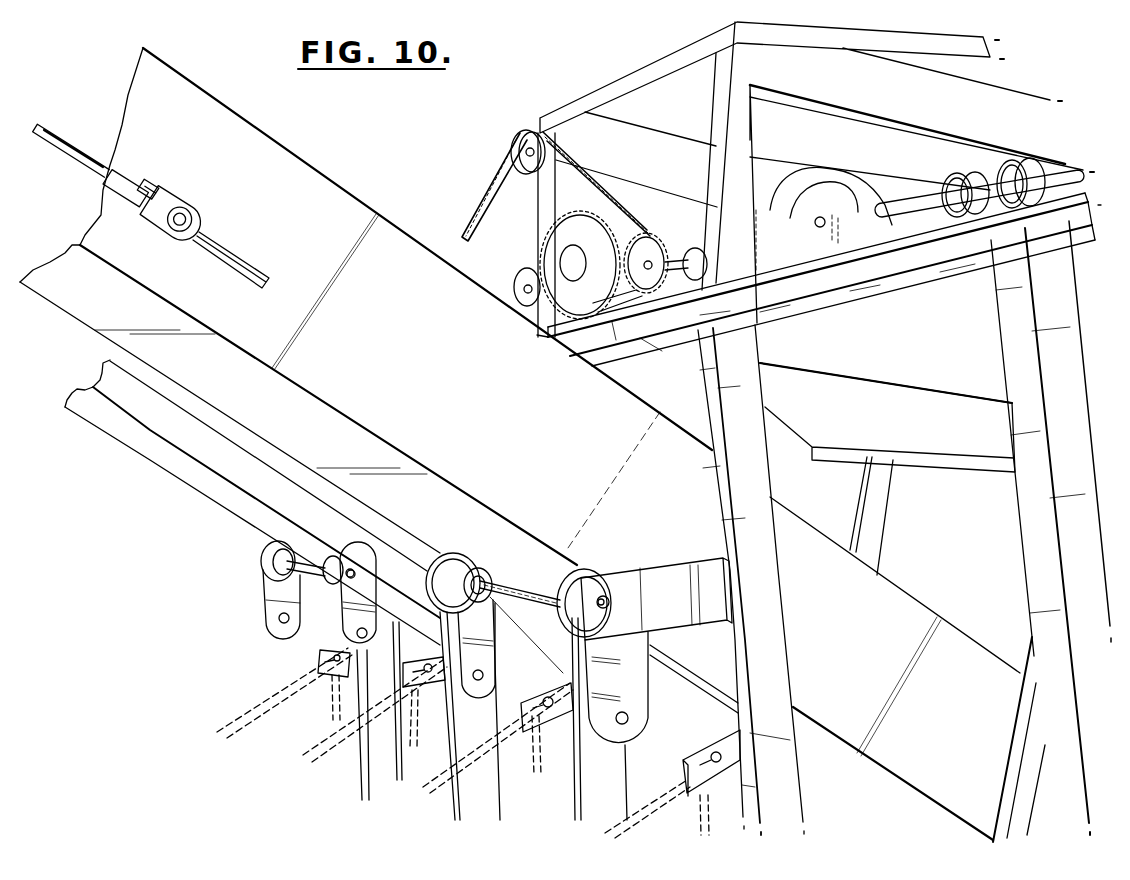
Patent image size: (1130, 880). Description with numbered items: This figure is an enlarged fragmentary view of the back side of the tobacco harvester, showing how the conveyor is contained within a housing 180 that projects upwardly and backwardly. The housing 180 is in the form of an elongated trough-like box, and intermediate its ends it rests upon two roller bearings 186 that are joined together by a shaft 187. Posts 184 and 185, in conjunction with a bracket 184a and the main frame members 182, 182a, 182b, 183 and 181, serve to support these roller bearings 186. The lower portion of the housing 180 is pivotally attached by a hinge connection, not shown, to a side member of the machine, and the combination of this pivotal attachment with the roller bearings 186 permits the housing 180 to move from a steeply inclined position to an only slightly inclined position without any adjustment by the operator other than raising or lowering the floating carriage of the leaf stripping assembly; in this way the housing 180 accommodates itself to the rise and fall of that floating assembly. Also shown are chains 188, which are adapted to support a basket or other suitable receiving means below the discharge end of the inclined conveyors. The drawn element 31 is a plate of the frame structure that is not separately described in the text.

The shelf plate 31 is at (920, 408).
The housing 180 is at (492, 380).
The main frame member 181 is at (907, 247).
The main frame member 182 is at (757, 602).
The main frame member 182a is at (1028, 753).
The main frame member 182b is at (872, 533).
The main frame member 183 is at (1068, 541).
The post 184 is at (610, 789).
The bracket 184a is at (661, 586).
The post 185 is at (476, 788).
The roller bearing 186 is at (450, 567).
The shaft 187 is at (516, 594).
The chain 188 is at (320, 740).